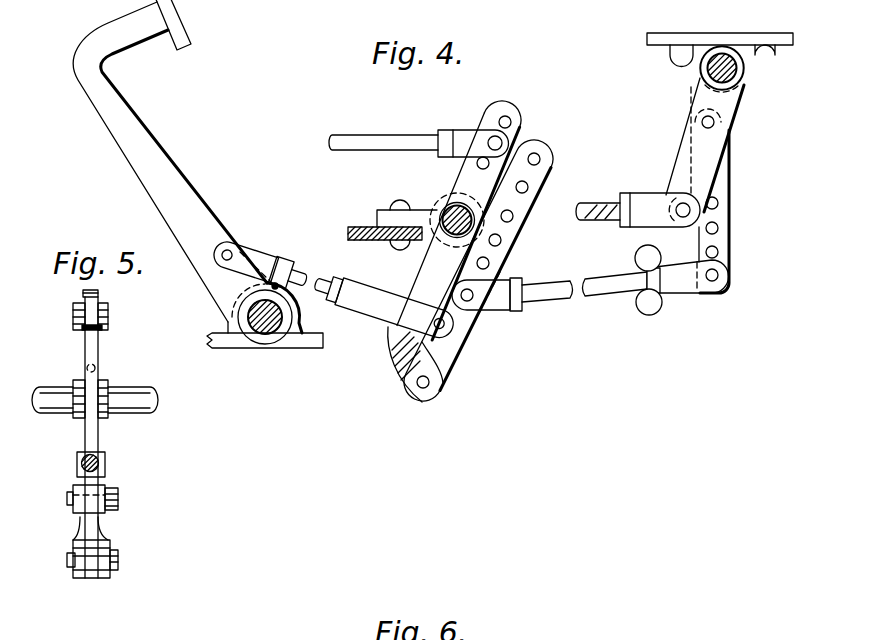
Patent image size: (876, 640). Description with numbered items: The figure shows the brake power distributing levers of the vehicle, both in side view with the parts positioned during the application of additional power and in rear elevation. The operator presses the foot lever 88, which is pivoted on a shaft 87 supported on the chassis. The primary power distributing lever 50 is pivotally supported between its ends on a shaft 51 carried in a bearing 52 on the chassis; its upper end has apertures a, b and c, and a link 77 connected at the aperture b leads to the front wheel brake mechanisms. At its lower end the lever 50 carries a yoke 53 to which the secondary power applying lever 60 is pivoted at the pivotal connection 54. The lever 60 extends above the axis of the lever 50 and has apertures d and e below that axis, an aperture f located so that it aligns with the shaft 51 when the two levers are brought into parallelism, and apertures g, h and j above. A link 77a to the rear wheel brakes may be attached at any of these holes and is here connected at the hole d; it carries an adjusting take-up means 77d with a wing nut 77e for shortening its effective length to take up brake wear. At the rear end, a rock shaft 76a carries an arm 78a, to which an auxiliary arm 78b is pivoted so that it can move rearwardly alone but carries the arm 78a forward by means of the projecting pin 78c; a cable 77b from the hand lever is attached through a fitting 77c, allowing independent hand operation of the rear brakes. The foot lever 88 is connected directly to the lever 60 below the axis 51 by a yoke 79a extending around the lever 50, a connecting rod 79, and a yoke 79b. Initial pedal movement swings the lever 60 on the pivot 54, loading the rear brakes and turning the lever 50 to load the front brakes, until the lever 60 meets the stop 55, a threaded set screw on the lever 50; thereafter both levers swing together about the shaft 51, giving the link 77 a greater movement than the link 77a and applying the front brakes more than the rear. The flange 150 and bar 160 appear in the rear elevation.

In FIG. 4, the primary power distributing lever 50 is at (459, 220).
In FIG. 4, the shaft 51 is at (445, 233).
In FIG. 5, the shaft 51 is at (135, 410).
In FIG. 4, the bearing 52 is at (440, 203).
In FIG. 4, the yoke 53 is at (405, 372).
In FIG. 5, the yoke 53 is at (75, 545).
In FIG. 4, the pivotal connection 54 is at (430, 382).
In FIG. 5, the pivotal connection 54 is at (67, 562).
In FIG. 4, the stop 55 is at (435, 343).
In FIG. 5, the stop 55 is at (103, 368).
In FIG. 4, the secondary power applying lever 60 is at (514, 236).
In FIG. 4, the rock shaft 76a is at (738, 73).
In FIG. 4, the link 77 is at (368, 143).
In FIG. 5, the link 77 is at (110, 313).
In FIG. 4, the link 77a is at (592, 295).
In FIG. 5, the link 77a is at (105, 463).
In FIG. 4, the cable 77b is at (597, 203).
In FIG. 4, the fitting 77c is at (640, 199).
In FIG. 4, the adjusting take-up means 77d is at (657, 285).
In FIG. 4, the wing nut 77e is at (648, 313).
In FIG. 4, the arm 78a is at (733, 108).
In FIG. 4, the auxiliary arm 78b is at (722, 194).
In FIG. 4, the pin 78c is at (684, 218).
In FIG. 4, the connecting rod 79 is at (302, 277).
In FIG. 4, the yoke 79a is at (370, 295).
In FIG. 5, the yoke 79a is at (107, 513).
In FIG. 4, the yoke 79b is at (268, 262).
In FIG. 4, the shaft 87 is at (248, 313).
In FIG. 4, the foot lever 88 is at (188, 194).
In FIG. 5, the flange 150 is at (83, 295).
In FIG. 5, the lever bar 160 is at (95, 352).
In FIG. 4, the aperture a is at (511, 121).
In FIG. 4, the aperture b is at (503, 142).
In FIG. 4, the aperture c is at (483, 157).
In FIG. 4, the aperture d is at (471, 298).
In FIG. 4, the aperture e is at (490, 263).
In FIG. 4, the aperture f is at (502, 240).
In FIG. 4, the aperture g is at (514, 216).
In FIG. 4, the aperture h is at (529, 187).
In FIG. 4, the aperture j is at (541, 158).